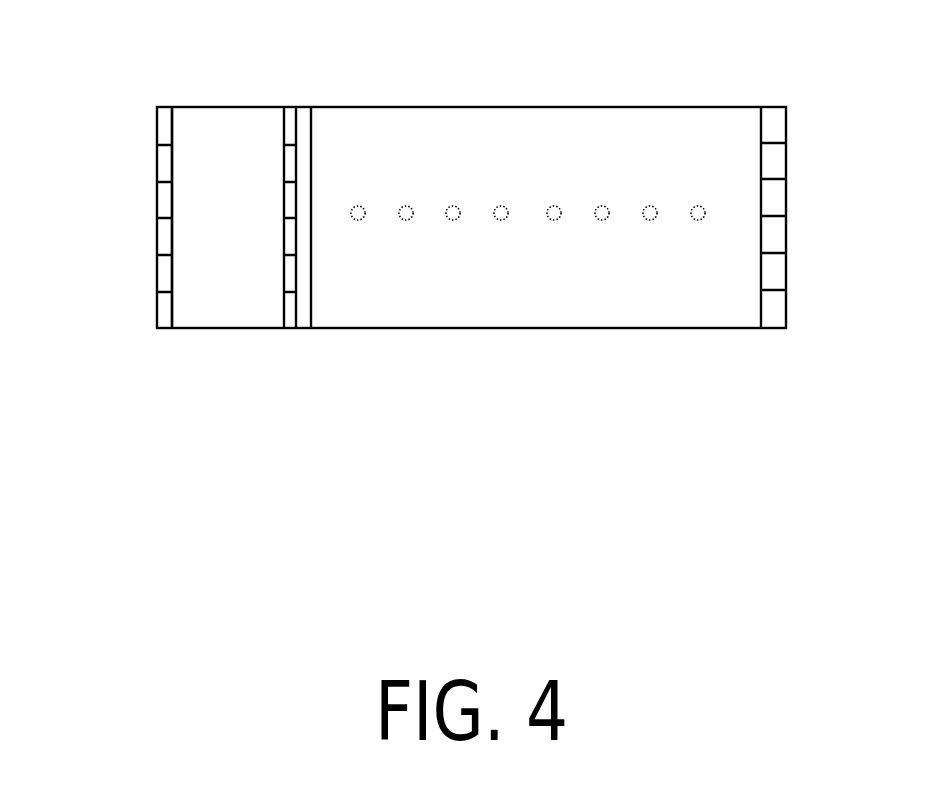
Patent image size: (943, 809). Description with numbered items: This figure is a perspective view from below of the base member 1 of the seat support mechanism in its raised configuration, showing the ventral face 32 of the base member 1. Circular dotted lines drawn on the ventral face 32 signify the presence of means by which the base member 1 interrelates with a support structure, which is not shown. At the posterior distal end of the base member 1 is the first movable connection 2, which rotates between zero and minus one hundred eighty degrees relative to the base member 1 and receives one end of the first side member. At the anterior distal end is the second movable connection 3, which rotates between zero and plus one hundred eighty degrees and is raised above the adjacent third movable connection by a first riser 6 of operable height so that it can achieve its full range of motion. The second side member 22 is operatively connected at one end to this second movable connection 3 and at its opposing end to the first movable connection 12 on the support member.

The base member 1 is at (539, 302).
The first movable connection 2 is at (802, 214).
The second movable connection 3 is at (287, 340).
The first riser 6 is at (303, 340).
The first movable connection 12 is at (150, 218).
The second side member 22 is at (233, 134).
The ventral face 32 is at (444, 156).